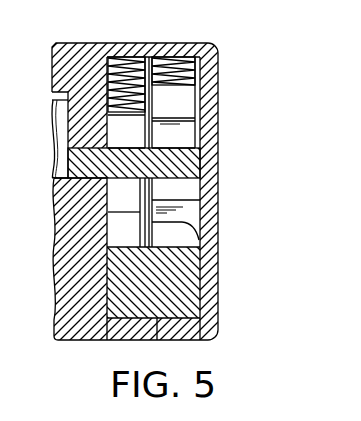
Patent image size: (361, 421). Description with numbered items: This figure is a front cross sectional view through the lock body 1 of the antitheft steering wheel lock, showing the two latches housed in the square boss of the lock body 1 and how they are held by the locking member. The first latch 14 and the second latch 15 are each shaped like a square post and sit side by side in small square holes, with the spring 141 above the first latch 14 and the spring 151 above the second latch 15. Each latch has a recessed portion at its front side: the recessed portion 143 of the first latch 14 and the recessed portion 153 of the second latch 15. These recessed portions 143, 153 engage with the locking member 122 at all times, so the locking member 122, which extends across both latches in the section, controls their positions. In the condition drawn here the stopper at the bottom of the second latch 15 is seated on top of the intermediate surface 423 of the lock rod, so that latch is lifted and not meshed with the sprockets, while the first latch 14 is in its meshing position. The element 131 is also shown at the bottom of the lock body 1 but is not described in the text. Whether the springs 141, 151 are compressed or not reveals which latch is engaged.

The lock body 1 is at (70, 50).
The first latch 14 is at (110, 130).
The second latch 15 is at (182, 94).
The locking member 122 is at (200, 163).
The bottom plate 131 is at (206, 329).
The spring 141 is at (120, 60).
The recessed portion 143 is at (118, 191).
The spring 151 is at (172, 60).
The recessed portion 153 is at (187, 130).
The intermediate surface 423 is at (196, 233).